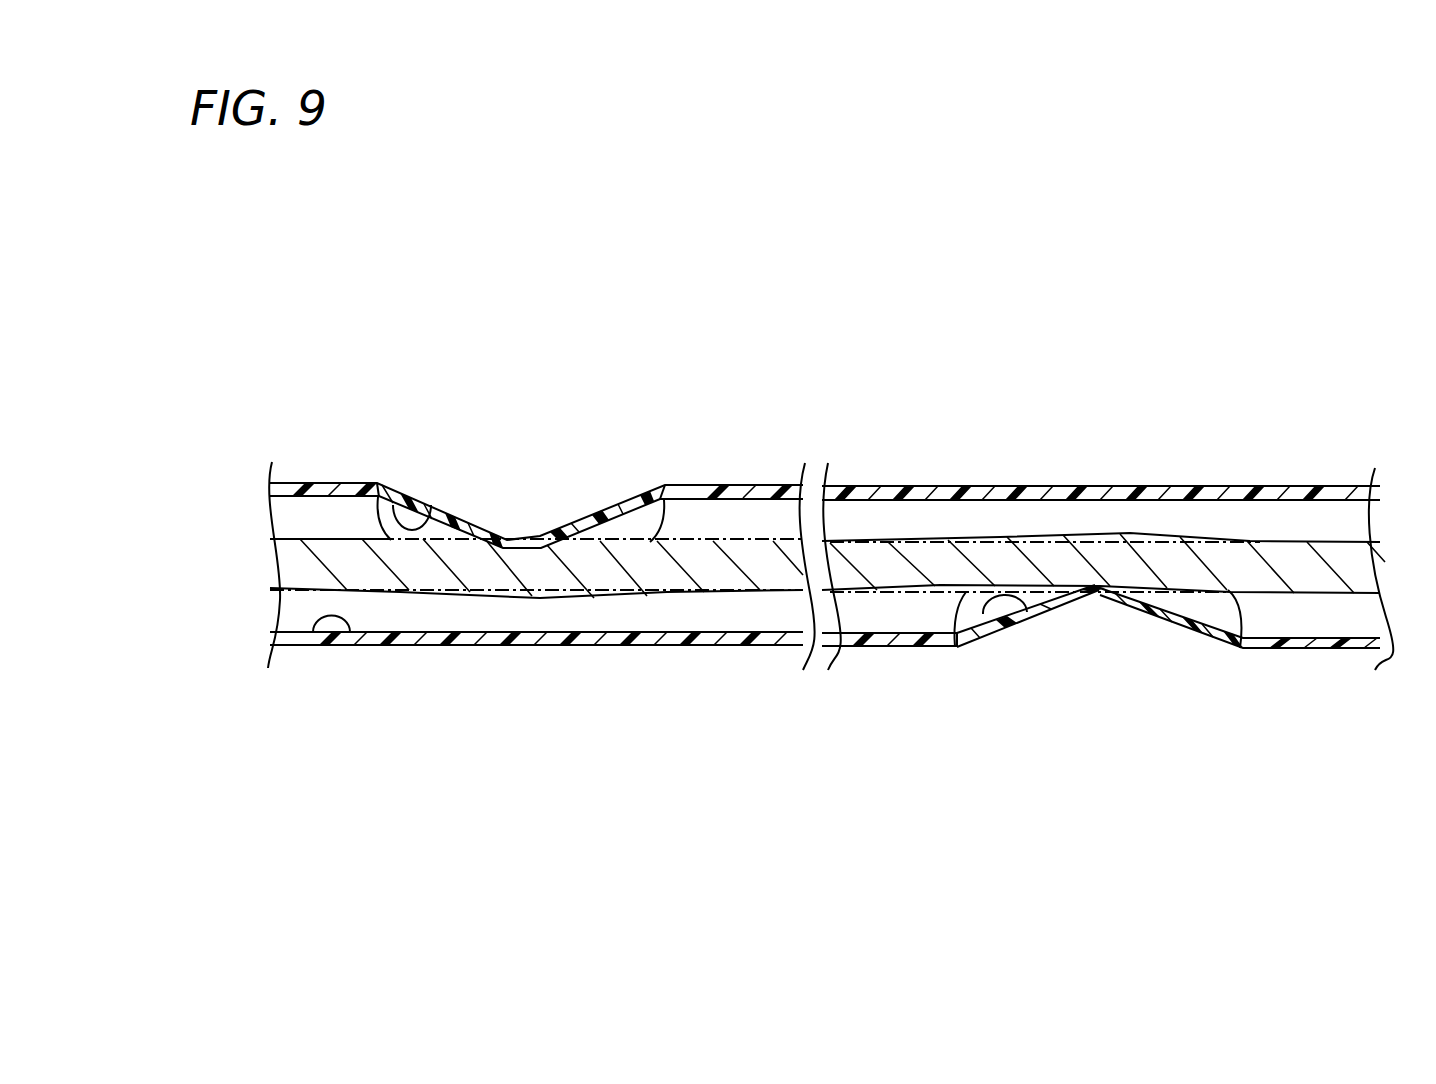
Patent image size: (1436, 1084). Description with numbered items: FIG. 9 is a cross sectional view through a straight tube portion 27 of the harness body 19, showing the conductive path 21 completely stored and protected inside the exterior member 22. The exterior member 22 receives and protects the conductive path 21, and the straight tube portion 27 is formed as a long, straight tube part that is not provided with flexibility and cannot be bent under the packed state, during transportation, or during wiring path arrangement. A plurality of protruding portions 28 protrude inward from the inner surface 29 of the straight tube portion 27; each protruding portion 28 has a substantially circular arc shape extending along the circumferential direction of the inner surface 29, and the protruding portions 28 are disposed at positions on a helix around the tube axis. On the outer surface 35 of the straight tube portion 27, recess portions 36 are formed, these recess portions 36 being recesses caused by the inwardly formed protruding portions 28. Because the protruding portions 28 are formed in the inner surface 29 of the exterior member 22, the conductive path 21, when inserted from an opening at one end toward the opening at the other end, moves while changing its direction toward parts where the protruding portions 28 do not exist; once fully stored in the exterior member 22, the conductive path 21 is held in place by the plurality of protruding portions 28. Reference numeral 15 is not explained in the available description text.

The distal portion 15 is at (1118, 296).
The harness body 19 is at (830, 565).
The conductive path 21 is at (1283, 543).
The exterior member 22 is at (1033, 486).
The straight tube portion 27 is at (885, 487).
The protruding portion 28 is at (399, 505).
The inner surface 29 is at (350, 633).
The outer surface 35 is at (408, 646).
The recess portion 36 is at (616, 503).